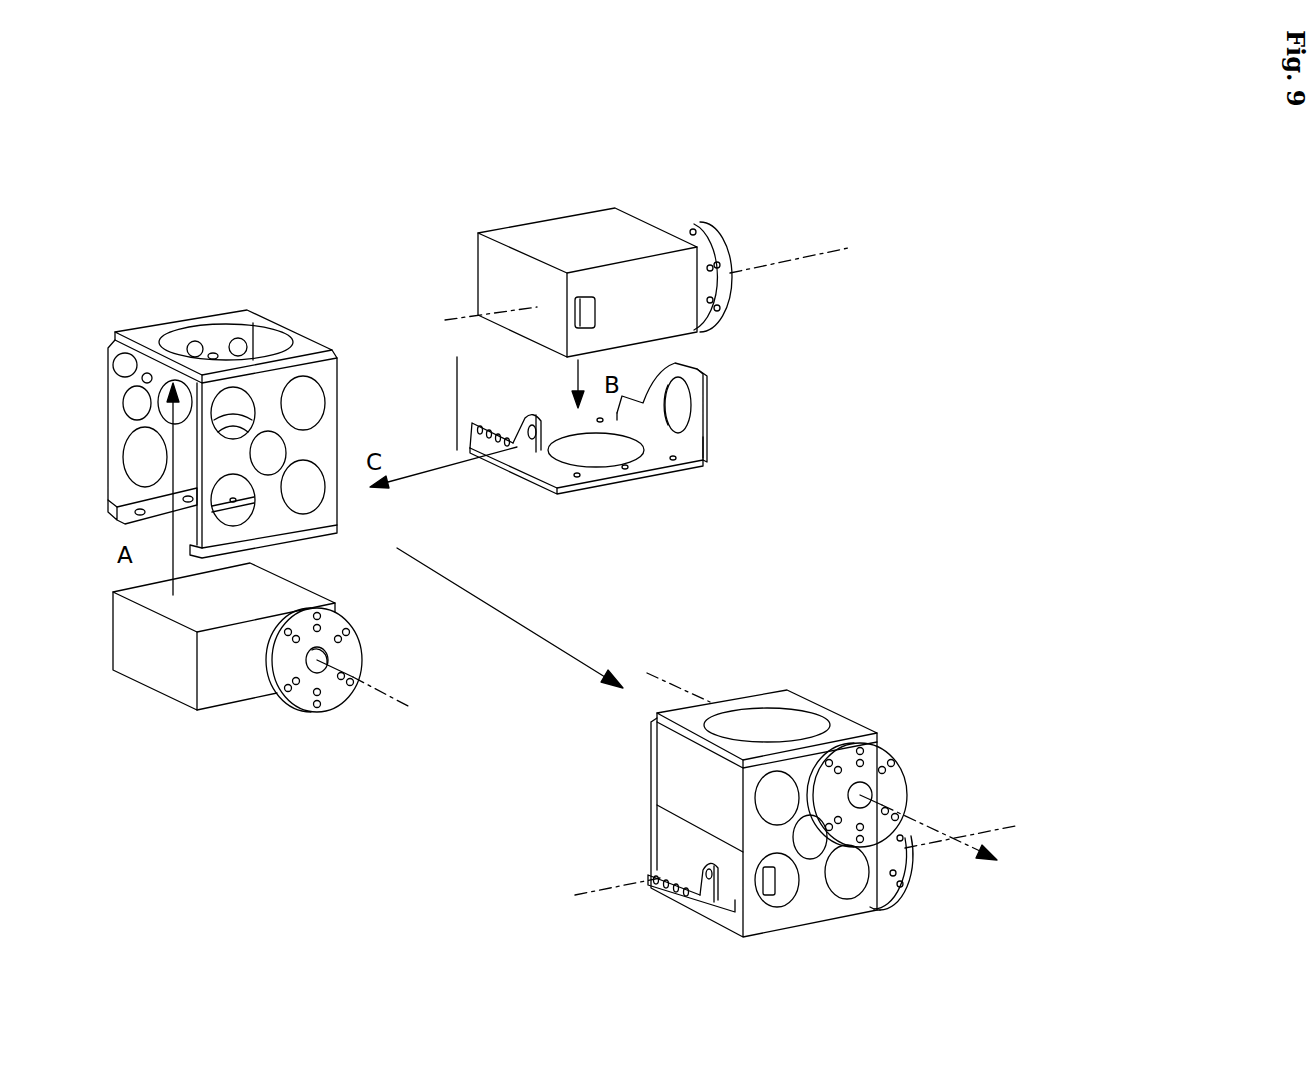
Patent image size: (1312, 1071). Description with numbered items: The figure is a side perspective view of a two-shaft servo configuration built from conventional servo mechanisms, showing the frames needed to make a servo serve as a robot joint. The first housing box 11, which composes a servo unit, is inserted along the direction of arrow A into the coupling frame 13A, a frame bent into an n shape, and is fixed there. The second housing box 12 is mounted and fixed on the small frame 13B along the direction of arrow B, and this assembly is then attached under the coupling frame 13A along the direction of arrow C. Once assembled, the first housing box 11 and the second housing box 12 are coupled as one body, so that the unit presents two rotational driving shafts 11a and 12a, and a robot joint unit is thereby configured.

The first housing box 11 is at (162, 675).
The rotational driving shaft 11a is at (669, 748).
The second housing box 12 is at (583, 243).
The rotational driving shaft 12a is at (988, 828).
The coupling frame 13A is at (297, 333).
The small frame 13B is at (640, 476).